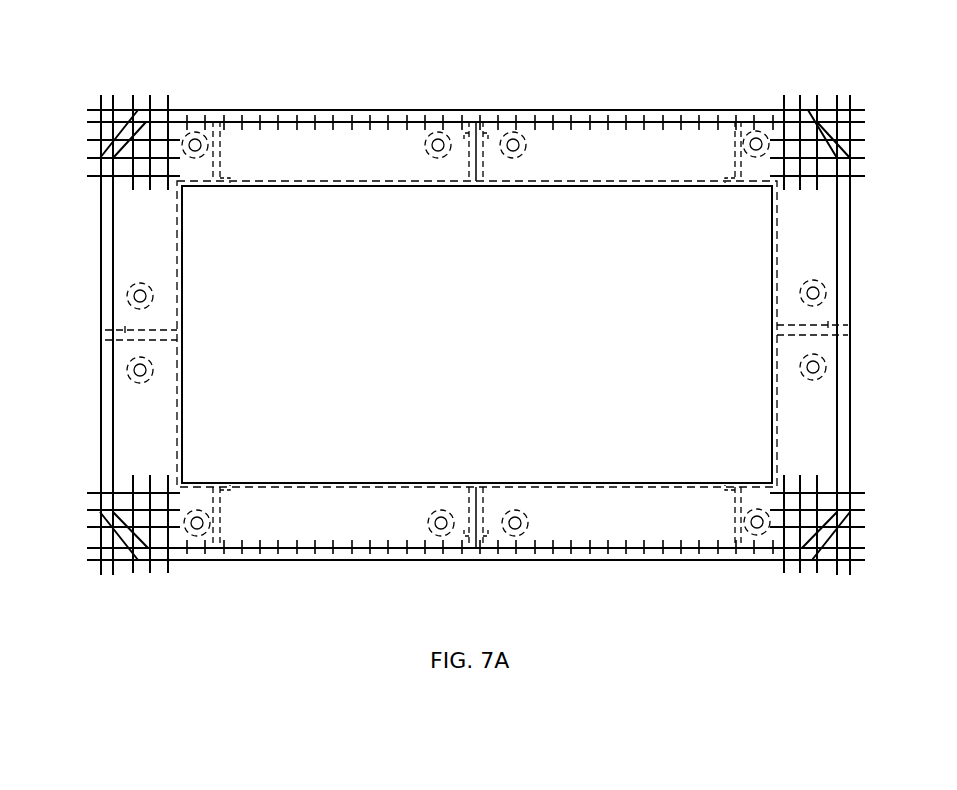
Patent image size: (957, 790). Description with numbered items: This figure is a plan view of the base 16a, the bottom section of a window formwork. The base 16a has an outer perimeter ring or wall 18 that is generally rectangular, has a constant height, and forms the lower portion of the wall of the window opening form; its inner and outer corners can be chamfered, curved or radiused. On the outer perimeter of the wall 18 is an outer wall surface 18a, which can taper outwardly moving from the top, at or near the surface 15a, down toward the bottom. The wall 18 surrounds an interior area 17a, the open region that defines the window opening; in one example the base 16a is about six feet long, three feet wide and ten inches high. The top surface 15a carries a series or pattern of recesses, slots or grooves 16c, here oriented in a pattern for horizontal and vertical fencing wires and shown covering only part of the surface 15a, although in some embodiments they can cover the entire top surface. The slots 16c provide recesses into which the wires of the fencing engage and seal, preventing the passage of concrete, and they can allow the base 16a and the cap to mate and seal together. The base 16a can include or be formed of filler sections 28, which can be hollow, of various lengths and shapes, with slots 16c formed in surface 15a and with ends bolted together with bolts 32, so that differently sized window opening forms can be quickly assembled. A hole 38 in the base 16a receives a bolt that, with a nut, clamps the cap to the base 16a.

The outer wall surface 18a is at (247, 110).
The outer perimeter ring or wall 18 is at (308, 148).
The surface 15a is at (375, 152).
The filler section 28 is at (572, 132).
The base 16a is at (680, 110).
The slots 16c is at (851, 262).
The bolts 32 is at (470, 137).
The hole 38 is at (513, 145).
The interior area 17a is at (357, 430).